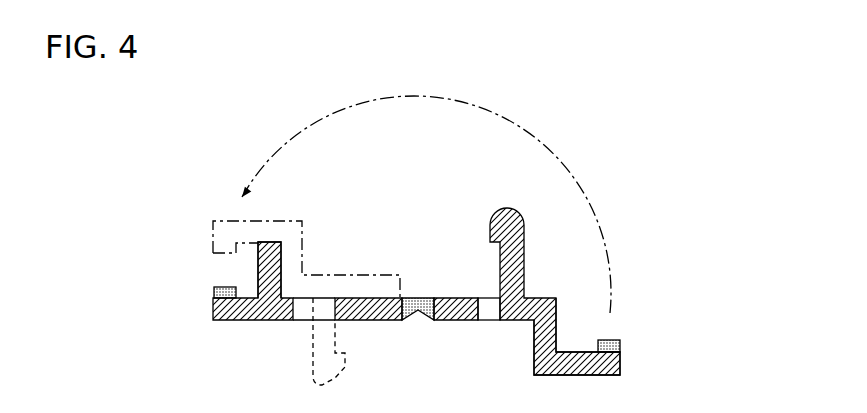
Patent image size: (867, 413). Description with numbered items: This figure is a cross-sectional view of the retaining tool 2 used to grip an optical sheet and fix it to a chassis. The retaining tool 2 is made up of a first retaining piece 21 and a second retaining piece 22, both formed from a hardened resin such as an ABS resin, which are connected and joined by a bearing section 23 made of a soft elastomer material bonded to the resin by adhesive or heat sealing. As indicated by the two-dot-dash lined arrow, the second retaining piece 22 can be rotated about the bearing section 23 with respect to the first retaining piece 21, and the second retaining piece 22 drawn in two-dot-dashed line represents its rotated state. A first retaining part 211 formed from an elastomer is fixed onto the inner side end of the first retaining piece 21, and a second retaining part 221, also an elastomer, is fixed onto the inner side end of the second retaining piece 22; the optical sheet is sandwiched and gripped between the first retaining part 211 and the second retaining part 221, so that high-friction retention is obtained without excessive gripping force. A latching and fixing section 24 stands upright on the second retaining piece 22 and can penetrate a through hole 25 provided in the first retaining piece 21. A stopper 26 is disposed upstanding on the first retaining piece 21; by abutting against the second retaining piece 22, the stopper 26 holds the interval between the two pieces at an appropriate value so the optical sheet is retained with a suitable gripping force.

The retaining tool 2 is at (258, 120).
The first retaining piece 21 is at (247, 318).
The first retaining part 211 is at (213, 289).
The second retaining piece 22 is at (278, 215).
The second retaining part 221 is at (621, 342).
The bearing section 23 is at (420, 315).
The latching and fixing section 24 is at (498, 232).
The through hole 25 is at (298, 315).
The stopper 26 is at (277, 262).